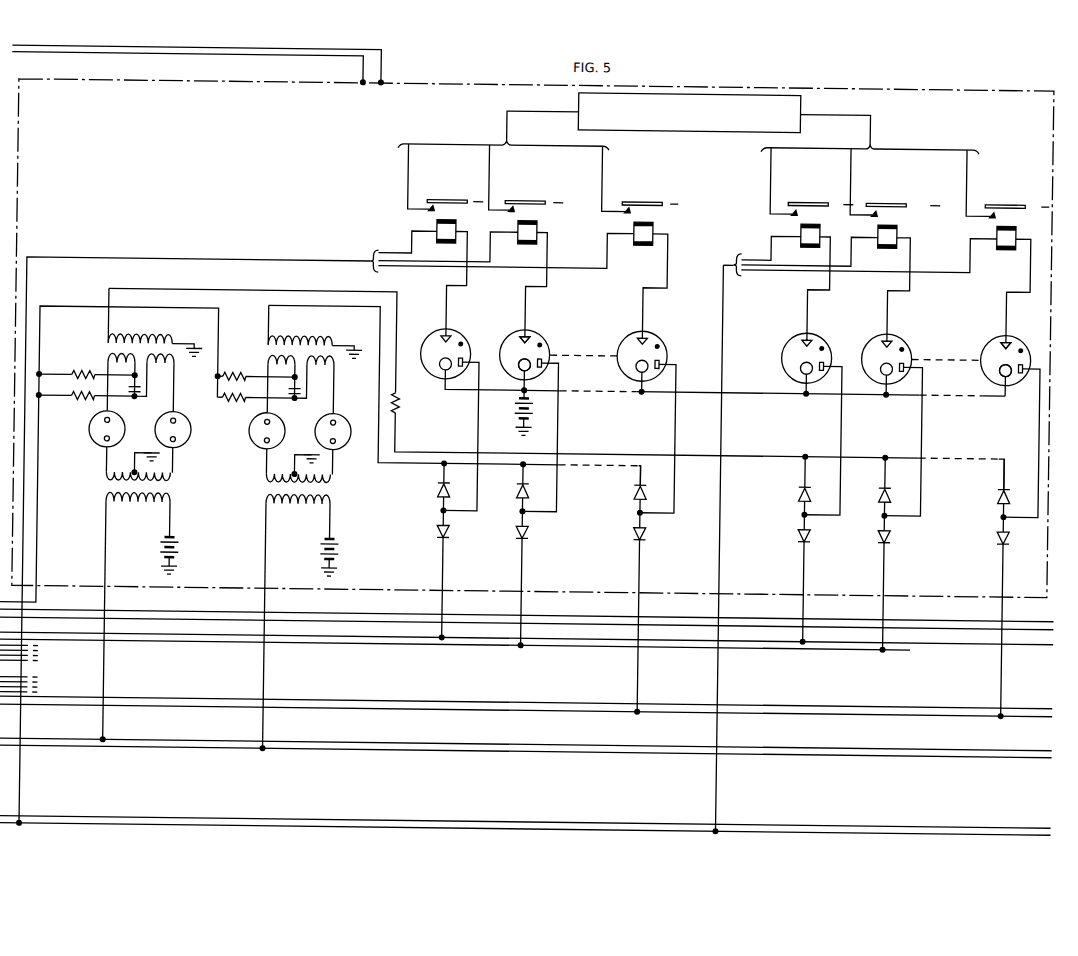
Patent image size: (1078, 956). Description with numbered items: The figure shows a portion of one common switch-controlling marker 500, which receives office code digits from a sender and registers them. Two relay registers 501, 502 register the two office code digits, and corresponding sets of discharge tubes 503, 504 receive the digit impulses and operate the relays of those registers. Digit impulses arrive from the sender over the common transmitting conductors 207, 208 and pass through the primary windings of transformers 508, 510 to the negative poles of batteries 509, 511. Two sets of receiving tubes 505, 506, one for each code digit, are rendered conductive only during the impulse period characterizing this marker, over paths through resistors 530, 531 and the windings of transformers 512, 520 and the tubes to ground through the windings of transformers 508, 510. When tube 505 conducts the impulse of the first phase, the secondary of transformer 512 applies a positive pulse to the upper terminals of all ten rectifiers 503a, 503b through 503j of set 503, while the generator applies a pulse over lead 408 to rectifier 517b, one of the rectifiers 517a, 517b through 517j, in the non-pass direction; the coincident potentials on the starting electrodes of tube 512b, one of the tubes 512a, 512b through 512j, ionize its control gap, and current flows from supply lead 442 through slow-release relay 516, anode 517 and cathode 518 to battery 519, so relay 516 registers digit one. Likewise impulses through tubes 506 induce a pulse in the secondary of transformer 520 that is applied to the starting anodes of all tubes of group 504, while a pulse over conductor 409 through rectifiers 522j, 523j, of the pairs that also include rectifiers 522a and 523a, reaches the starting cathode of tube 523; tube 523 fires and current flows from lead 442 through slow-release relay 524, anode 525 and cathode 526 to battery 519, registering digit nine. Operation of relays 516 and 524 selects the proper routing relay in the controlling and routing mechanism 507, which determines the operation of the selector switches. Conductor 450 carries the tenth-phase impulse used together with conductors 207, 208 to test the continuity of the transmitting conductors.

The marker 500 is at (441, 77).
The controlling and routing mechanism 507 is at (676, 124).
The slow-release relay 516 is at (540, 222).
The relay register 501 is at (524, 235).
The relay register 502 is at (891, 239).
The slow-release relay 524 is at (1005, 239).
The anode 525 is at (1010, 331).
The discharge tube 512a is at (445, 324).
The discharge tube 512b is at (518, 327).
The discharge tube 512j is at (640, 325).
The anode 517 is at (533, 332).
The cathode 518 is at (521, 372).
The battery 519 is at (536, 405).
The set of discharge tubes 503 is at (636, 412).
The rectifier 503a is at (442, 490).
The rectifier 503b is at (522, 489).
The rectifier 503j is at (639, 488).
The rectifier 517a is at (442, 529).
The rectifier 517b is at (522, 528).
The rectifier 517j is at (639, 527).
The tube 523 is at (986, 360).
The cathode 526 is at (1012, 366).
The set of discharge tubes 504 is at (909, 494).
The diode 522a is at (803, 491).
The rectifier 523a is at (803, 531).
The rectifier 522j is at (1002, 488).
The rectifier 523j is at (1002, 528).
The transformer 520 is at (138, 331).
The transformer 512 is at (298, 329).
The resistor 531 is at (81, 386).
The resistor 530 is at (241, 386).
The receiving tubes 506 is at (140, 429).
The receiving tubes 505 is at (300, 431).
The transformer 510 is at (135, 507).
The transformer 508 is at (295, 505).
The battery 511 is at (186, 533).
The battery 509 is at (346, 531).
The conductor 409 is at (143, 703).
The lead 408 is at (314, 641).
The conductor 208 is at (85, 739).
The conductor 207 is at (142, 744).
The generator supply lead 442 is at (146, 818).
The conductor 450 is at (208, 816).